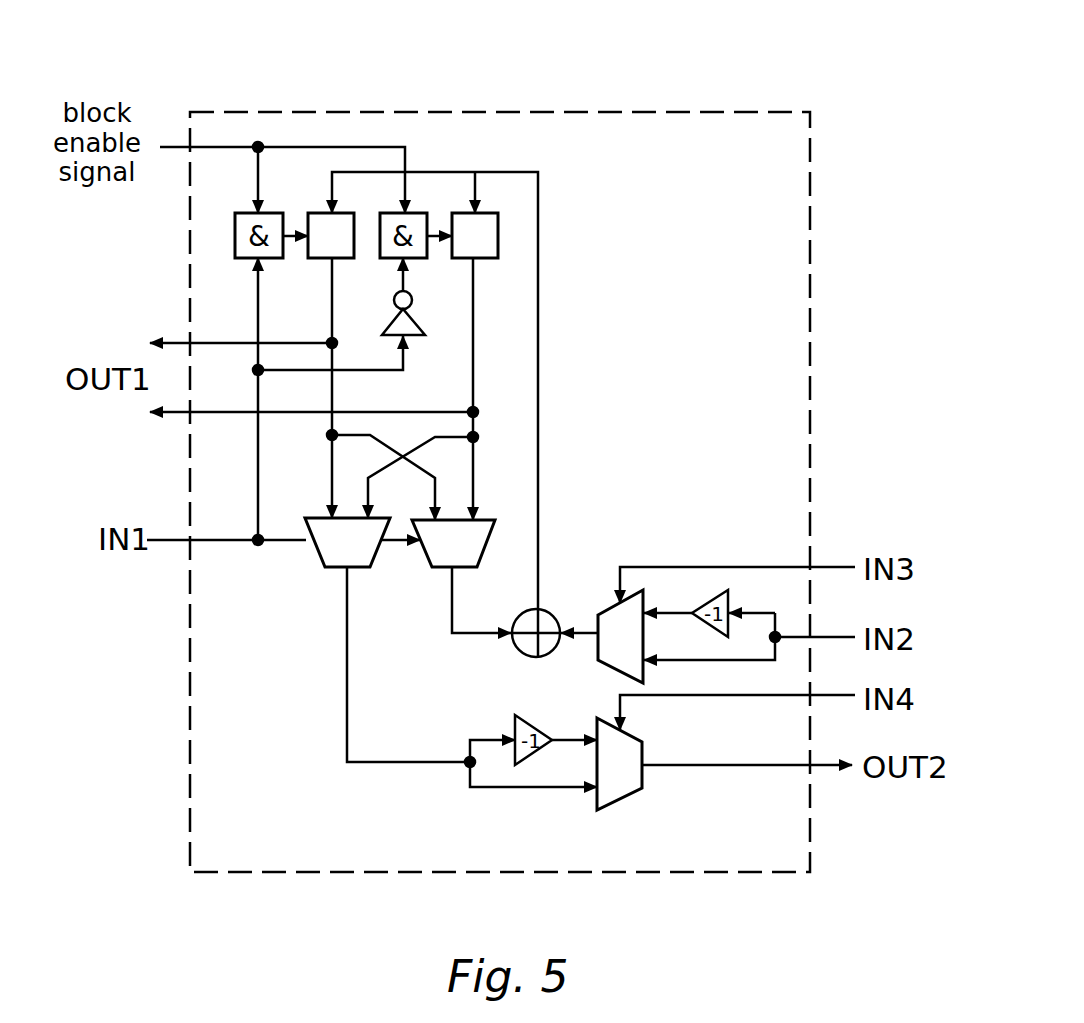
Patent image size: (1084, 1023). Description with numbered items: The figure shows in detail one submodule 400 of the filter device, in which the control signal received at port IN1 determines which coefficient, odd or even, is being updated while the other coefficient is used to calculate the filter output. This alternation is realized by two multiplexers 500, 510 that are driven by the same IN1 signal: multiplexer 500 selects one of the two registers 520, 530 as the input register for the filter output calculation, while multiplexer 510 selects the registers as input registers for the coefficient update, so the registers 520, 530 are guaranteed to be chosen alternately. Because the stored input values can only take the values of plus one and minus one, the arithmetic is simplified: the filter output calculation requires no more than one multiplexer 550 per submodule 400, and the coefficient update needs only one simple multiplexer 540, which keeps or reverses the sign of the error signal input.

The submodule 400 is at (725, 113).
The multiplexer 500 is at (325, 567).
The multiplexer 510 is at (432, 567).
The register 520 is at (347, 258).
The register 530 is at (485, 258).
The multiplexer 540 is at (598, 607).
The multiplexer 550 is at (597, 723).